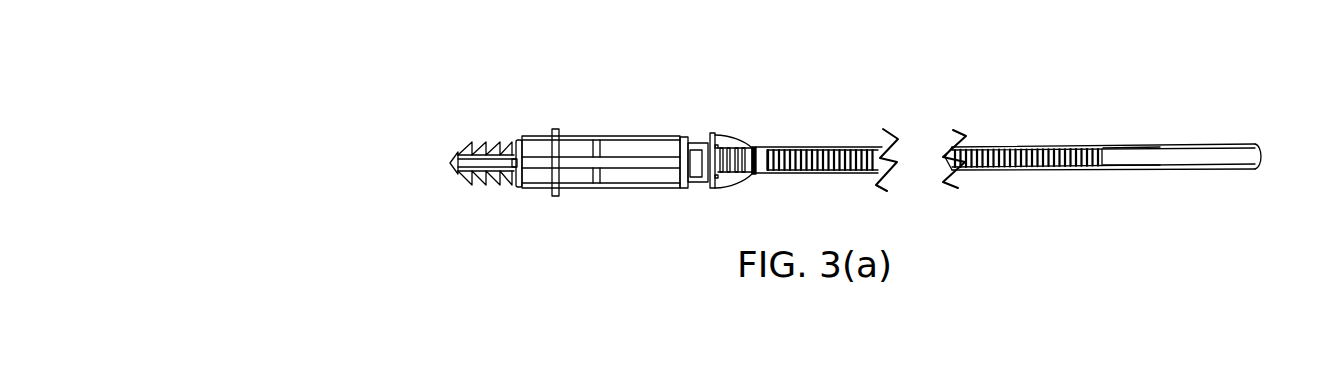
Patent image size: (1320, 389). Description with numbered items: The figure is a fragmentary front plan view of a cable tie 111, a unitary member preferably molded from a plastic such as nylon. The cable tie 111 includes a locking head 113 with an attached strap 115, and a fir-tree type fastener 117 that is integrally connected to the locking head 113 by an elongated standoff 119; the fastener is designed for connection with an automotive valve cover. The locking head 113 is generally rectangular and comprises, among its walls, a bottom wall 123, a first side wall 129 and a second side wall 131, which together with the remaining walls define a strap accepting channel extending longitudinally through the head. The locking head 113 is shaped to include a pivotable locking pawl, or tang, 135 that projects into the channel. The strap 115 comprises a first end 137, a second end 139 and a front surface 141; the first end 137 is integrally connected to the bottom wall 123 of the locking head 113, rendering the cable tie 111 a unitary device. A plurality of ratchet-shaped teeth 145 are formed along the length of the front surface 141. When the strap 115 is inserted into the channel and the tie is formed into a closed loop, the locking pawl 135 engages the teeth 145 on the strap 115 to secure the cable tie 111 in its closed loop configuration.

The cable tie 111 is at (558, 297).
The locking head 113 is at (703, 189).
The strap 115 is at (998, 172).
The fir-tree type fastener 117 is at (462, 181).
The elongated standoff 119 is at (617, 137).
The bottom wall 123 is at (716, 136).
The first side wall 129 is at (693, 188).
The second side wall 131 is at (703, 132).
The locking pawl 135 is at (692, 132).
The first end 137 is at (733, 188).
The second end 139 is at (1253, 163).
The front surface 141 is at (1122, 158).
The ratchet-shaped teeth 145 is at (1036, 148).